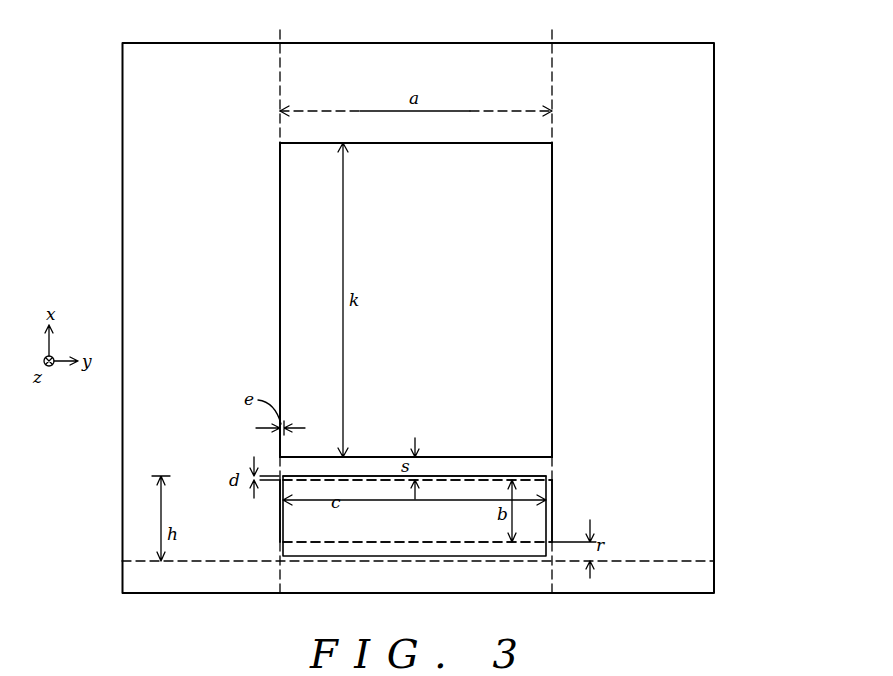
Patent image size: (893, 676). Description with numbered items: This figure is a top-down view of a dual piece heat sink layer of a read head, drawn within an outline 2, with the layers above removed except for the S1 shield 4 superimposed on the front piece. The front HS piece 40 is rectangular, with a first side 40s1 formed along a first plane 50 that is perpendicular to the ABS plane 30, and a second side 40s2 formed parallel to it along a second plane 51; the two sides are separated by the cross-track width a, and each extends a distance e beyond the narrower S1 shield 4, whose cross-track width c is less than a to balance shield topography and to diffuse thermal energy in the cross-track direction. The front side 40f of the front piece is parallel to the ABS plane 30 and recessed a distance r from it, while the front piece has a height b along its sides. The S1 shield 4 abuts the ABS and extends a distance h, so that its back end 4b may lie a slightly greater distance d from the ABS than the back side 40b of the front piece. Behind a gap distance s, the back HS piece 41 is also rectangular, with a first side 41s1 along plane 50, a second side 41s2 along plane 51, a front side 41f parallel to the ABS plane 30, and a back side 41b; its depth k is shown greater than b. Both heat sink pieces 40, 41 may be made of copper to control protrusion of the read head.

The magnetic head slider / body 2 is at (162, 170).
The S1 shield 4 is at (346, 556).
The back end of the S1 shield 4b is at (543, 476).
The ABS plane 30 is at (122, 561).
The front HS piece 40 is at (280, 529).
The back side of the front piece 40b is at (500, 475).
The front side of the front piece 40f is at (458, 542).
The first side of the front piece 40s1 is at (280, 517).
The second side of the front piece 40s2 is at (553, 503).
The back HS piece 41 is at (528, 259).
The back side of the back piece 41b is at (533, 143).
The front side of the back piece 41f is at (502, 456).
The first side of the back piece 41s1 is at (279, 265).
The second side of the back piece 41s2 is at (552, 330).
The first plane 50 is at (279, 312).
The second plane 51 is at (553, 312).